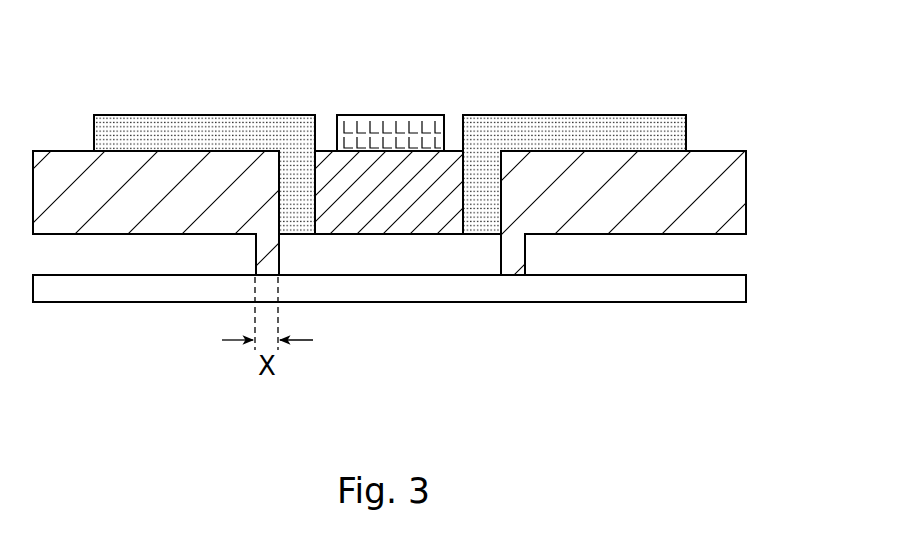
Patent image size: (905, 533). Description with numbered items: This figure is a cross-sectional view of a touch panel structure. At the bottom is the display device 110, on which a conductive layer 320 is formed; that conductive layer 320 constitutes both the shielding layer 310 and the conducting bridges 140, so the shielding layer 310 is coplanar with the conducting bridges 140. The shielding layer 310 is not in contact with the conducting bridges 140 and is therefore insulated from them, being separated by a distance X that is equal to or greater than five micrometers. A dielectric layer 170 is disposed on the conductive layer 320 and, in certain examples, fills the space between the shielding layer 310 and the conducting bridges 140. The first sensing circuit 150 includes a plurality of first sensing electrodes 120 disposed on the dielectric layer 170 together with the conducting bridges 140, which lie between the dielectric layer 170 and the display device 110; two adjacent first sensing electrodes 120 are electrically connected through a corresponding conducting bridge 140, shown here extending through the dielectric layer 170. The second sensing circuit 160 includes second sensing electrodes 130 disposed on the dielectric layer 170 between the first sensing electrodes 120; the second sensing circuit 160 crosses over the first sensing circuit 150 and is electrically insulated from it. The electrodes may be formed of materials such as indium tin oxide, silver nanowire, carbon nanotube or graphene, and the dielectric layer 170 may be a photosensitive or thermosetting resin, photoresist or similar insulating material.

The display device 110 is at (737, 289).
The first sensing electrodes 120 is at (225, 133).
The second sensing electrodes 130 is at (389, 132).
The conducting bridges 140 is at (478, 267).
The first sensing circuit 150 is at (280, 95).
The second sensing circuit 160 is at (424, 95).
The dielectric layer 170 is at (737, 194).
The shielding layer 310 is at (542, 267).
The conductive layer 320 is at (389, 323).